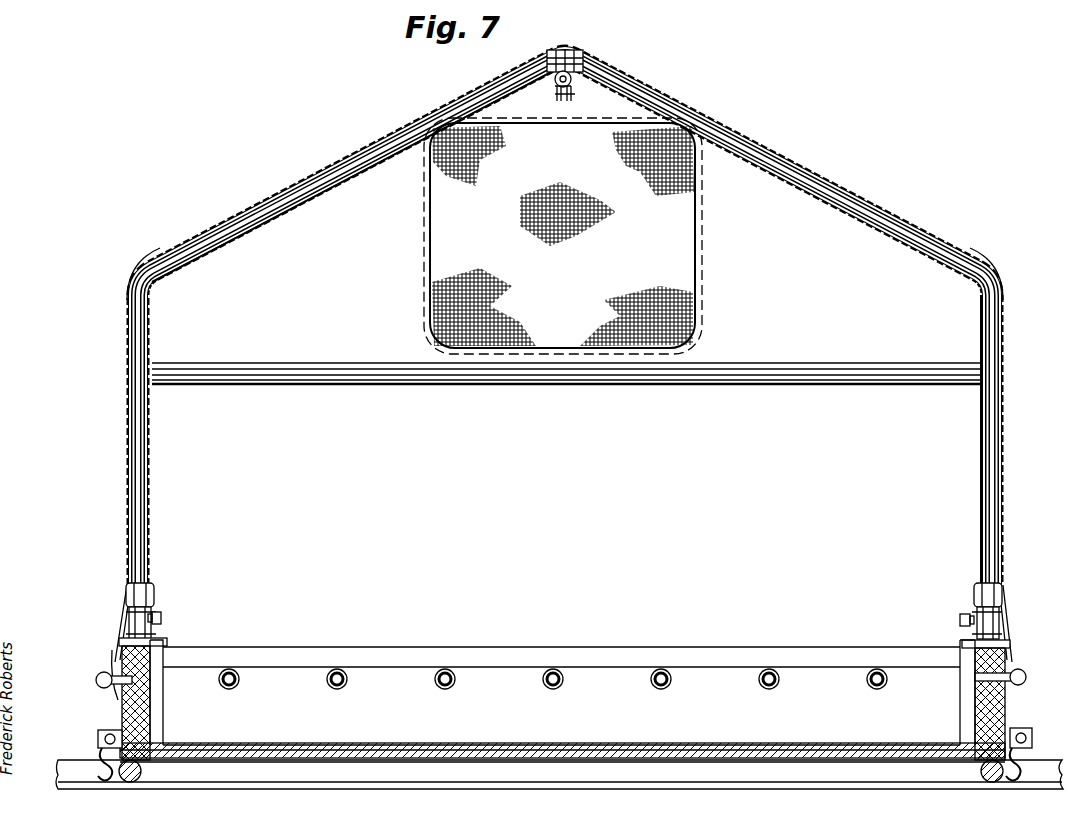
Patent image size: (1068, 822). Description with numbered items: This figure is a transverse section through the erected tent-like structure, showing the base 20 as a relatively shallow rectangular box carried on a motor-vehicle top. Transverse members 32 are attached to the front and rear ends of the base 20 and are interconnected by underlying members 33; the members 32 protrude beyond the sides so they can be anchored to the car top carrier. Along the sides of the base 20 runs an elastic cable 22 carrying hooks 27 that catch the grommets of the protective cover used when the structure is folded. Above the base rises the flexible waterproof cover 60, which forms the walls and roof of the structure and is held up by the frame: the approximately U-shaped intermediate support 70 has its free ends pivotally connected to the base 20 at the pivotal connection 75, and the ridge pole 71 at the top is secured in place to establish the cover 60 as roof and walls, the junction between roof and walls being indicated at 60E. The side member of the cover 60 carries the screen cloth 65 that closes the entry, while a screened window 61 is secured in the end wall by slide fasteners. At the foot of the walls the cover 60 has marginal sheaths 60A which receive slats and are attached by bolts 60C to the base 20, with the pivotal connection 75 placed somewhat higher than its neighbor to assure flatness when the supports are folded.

The base 20 is at (505, 682).
The elastic cable 22 is at (104, 732).
The hook 27 is at (98, 756).
The transverse member 32 is at (57, 776).
The underlying member 33 is at (160, 758).
The cover 60 is at (868, 200).
The marginal sheath 60A is at (118, 666).
The bolt 60C is at (120, 692).
The junction between roof and walls 60E is at (136, 268).
The screened window 61 is at (672, 252).
The screen cloth 65 is at (1008, 482).
The intermediate support 70 is at (200, 246).
The ridge pole 71 is at (551, 85).
The pivotal connection 75 is at (158, 616).